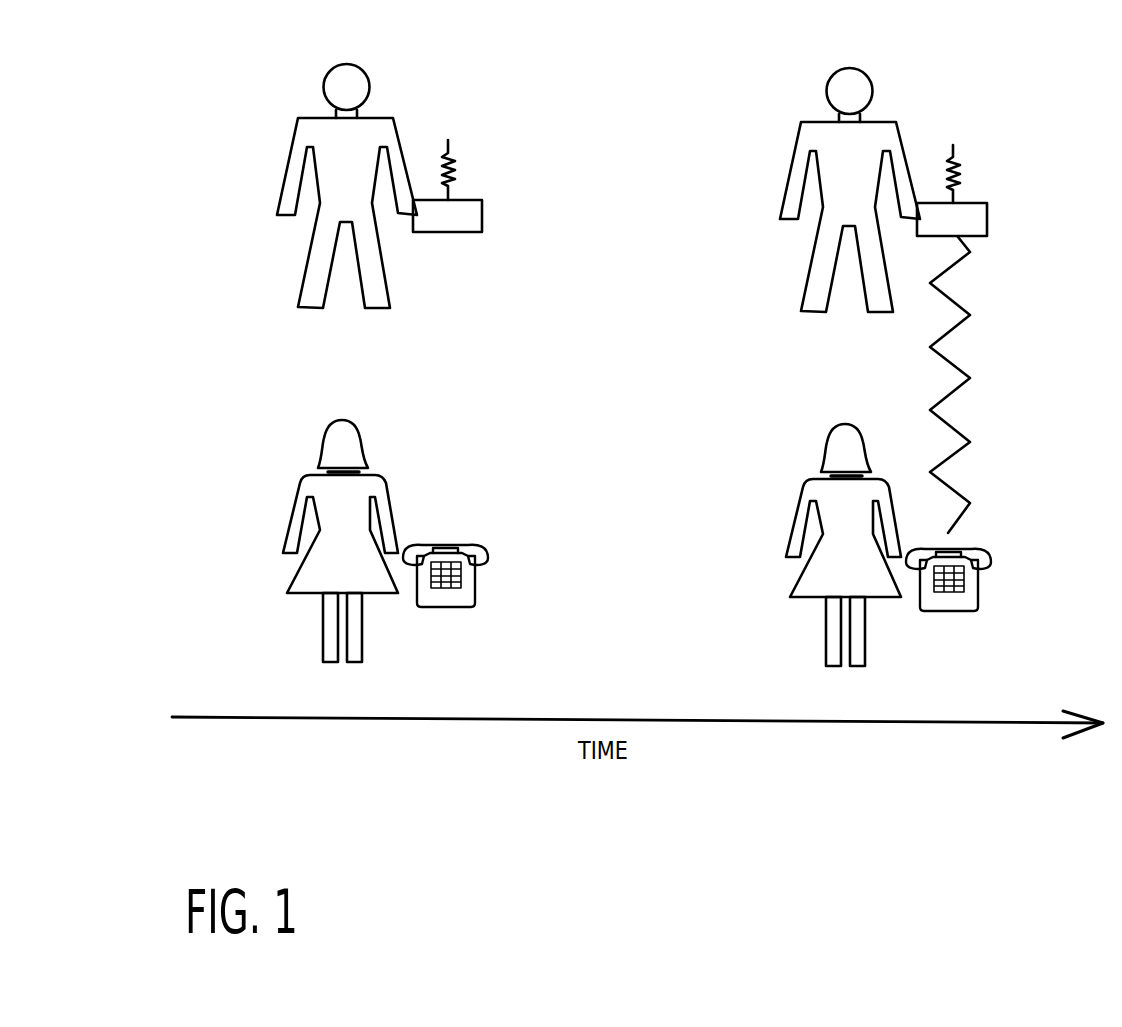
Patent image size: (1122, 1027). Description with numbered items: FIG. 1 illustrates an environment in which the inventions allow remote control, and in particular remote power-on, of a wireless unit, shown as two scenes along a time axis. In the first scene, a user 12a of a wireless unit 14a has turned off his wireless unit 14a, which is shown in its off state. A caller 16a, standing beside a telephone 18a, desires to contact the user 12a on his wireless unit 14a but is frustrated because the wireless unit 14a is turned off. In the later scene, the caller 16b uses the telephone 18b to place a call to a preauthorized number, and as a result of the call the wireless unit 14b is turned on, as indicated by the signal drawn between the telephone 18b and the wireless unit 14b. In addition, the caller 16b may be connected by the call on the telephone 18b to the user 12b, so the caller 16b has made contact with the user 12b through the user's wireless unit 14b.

The user 12a is at (366, 73).
The wireless unit 14a is at (482, 203).
The caller 16a is at (358, 428).
The telephone 18a is at (488, 549).
The user 12b is at (858, 186).
The wireless unit 14b is at (984, 190).
The caller 16b is at (847, 529).
The telephone 18b is at (980, 572).